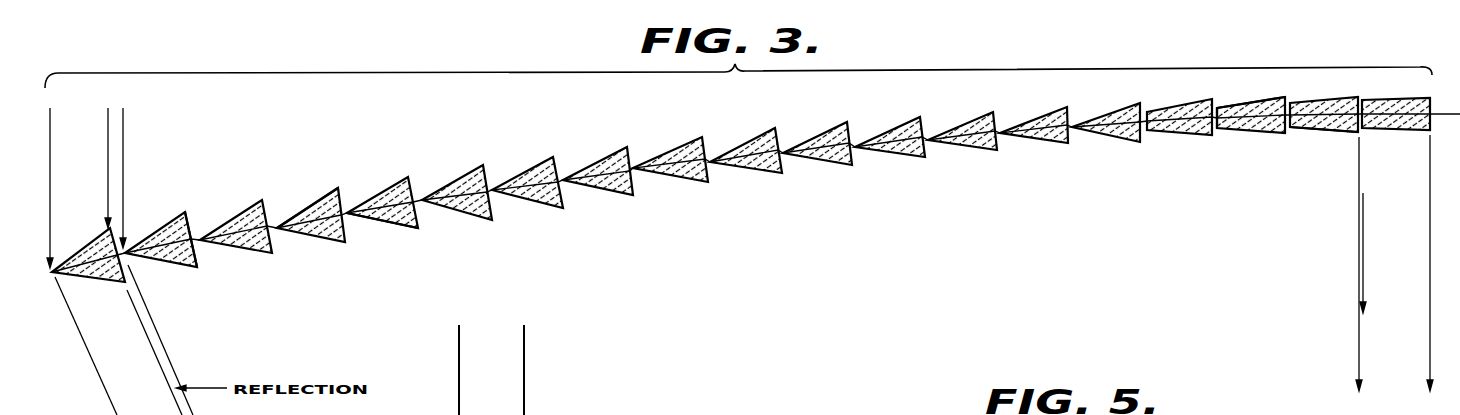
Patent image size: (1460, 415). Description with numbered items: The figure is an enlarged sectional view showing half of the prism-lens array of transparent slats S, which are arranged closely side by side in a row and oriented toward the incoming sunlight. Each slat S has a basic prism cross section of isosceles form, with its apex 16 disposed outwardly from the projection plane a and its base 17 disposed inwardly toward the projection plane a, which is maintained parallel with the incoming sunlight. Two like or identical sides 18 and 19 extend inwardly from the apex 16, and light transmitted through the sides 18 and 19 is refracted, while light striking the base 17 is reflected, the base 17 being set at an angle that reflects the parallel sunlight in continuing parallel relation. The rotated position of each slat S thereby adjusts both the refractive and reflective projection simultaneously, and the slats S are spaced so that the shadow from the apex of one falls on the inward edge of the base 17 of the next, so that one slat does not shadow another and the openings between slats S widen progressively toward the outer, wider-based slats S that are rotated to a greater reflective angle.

The transparent slat S is at (468, 158).
The apex 16 is at (55, 278).
The base 17 is at (193, 223).
The side 18 is at (313, 200).
The side 19 is at (378, 226).
The projection plane a is at (1430, 248).
The length of segment l is at (1450, 187).